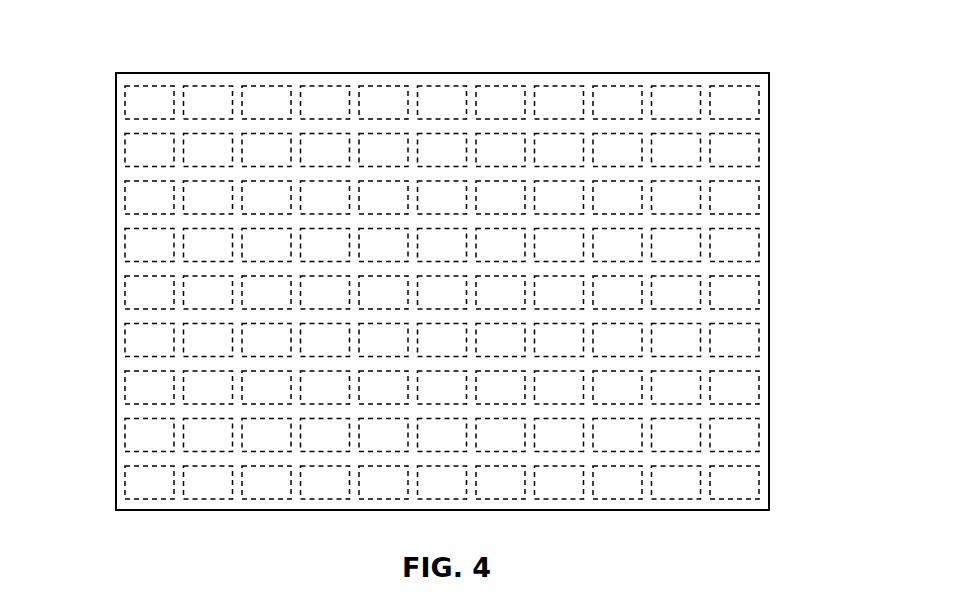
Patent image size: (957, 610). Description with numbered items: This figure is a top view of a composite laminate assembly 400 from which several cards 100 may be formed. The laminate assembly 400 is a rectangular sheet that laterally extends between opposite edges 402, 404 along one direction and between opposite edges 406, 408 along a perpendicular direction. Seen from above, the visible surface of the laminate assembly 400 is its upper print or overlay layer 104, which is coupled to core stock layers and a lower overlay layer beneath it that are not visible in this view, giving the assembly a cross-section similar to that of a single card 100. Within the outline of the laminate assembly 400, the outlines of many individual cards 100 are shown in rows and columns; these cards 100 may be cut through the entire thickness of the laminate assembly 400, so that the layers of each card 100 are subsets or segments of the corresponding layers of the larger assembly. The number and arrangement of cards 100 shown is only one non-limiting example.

The composite laminate assembly 400 is at (788, 92).
The upper print or overlay layer 104 is at (767, 124).
The card 100 is at (742, 245).
The edge 406 is at (413, 72).
The edge 404 is at (770, 268).
The edge 402 is at (114, 268).
The edge 408 is at (322, 512).